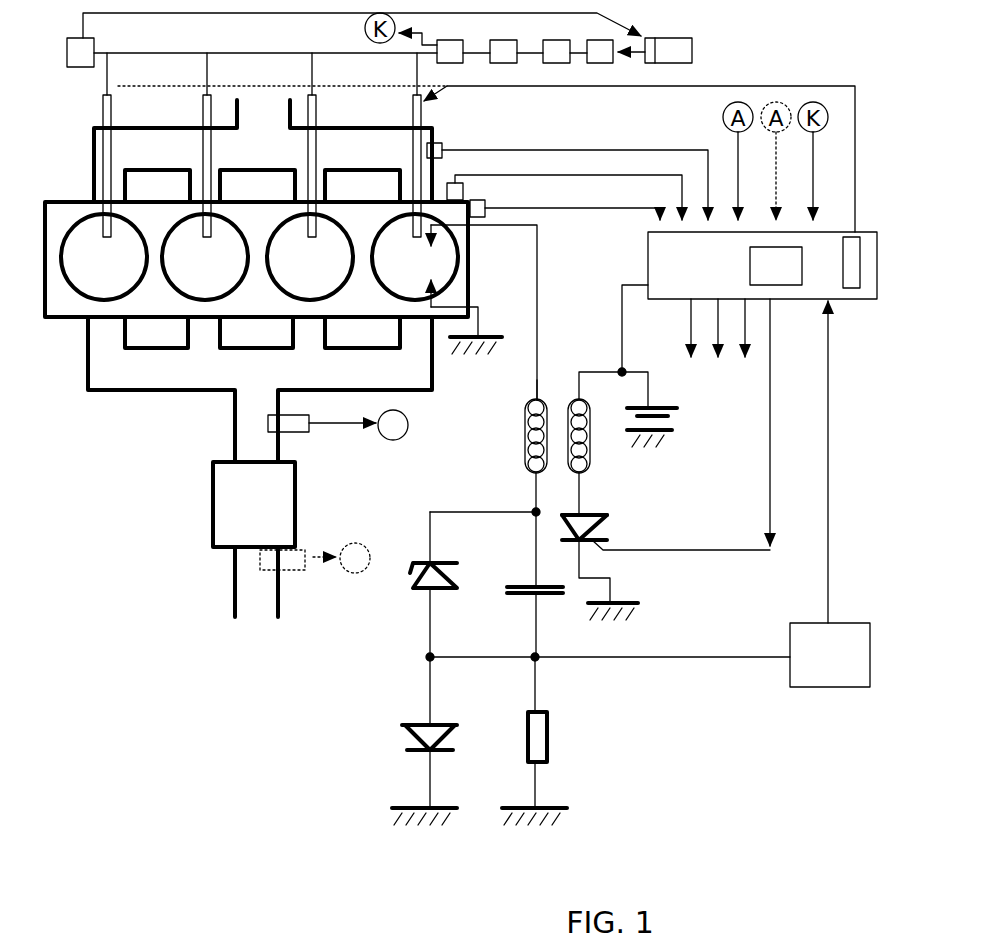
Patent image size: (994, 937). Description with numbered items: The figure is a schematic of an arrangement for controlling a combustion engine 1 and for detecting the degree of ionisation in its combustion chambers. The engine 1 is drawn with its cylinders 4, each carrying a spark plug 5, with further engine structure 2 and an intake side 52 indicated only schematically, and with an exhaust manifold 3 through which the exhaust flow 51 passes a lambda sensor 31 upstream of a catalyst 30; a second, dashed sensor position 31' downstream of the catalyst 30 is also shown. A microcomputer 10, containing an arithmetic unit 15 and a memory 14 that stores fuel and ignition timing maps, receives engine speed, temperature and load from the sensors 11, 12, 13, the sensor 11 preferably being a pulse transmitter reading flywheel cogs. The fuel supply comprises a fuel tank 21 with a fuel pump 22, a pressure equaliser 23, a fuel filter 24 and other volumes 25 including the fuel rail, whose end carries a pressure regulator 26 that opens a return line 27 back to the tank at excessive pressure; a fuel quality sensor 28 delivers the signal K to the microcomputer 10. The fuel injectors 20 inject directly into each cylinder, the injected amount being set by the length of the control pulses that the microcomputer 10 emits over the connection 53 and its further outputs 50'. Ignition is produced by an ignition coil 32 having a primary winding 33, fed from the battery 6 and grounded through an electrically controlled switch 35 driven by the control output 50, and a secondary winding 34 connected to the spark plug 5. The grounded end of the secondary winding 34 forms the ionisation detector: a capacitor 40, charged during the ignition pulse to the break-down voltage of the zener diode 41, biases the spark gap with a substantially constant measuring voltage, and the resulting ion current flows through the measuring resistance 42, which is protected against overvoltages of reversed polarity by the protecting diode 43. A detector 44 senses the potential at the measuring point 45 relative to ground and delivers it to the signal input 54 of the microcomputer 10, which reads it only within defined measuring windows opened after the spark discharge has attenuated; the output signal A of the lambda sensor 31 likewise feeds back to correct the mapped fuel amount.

The combustion engine 1 is at (58, 196).
The cylinder head 2 is at (118, 153).
The exhaust manifold 3 is at (112, 363).
The cylinder 4 is at (96, 265).
The spark plug 5 is at (428, 262).
The battery 6 is at (660, 406).
The microcomputer 10 is at (670, 266).
The sensor 11 is at (478, 200).
The sensor 12 is at (452, 183).
The sensor 13 is at (445, 148).
The memory 14 is at (848, 237).
The arithmetic unit 15 is at (764, 281).
The fuel injectors 20 is at (120, 86).
The fuel tank 21 is at (680, 50).
The fuel pump 22 is at (642, 58).
The pressure equaliser 23 is at (606, 48).
The fuel filter 24 is at (558, 48).
The other containers 25 is at (503, 46).
The pressure regulator 26 is at (67, 52).
The return line 27 is at (212, 17).
The fuel quality sensor 28 is at (460, 48).
The catalyst 30 is at (240, 522).
The lambda sensor 31 is at (338, 433).
The alternative exhaust gas sensor position 31' is at (315, 580).
The ignition coil 32 is at (558, 383).
The primary winding 33 is at (588, 446).
The secondary winding 34 is at (524, 445).
The electrically controlled switch 35 is at (590, 527).
The capacitor 40 is at (523, 585).
The zener diode 41 is at (422, 580).
The measuring resistance 42 is at (540, 730).
The protecting diode 43 is at (437, 732).
The detector 44 is at (816, 682).
The measuring point 45 is at (530, 659).
The control output 50 is at (704, 424).
The injector control signals 50' is at (718, 347).
The exhaust gas flow 51 is at (250, 664).
The intake manifold 52 is at (250, 130).
The signal line 53 is at (855, 160).
The signal input 54 is at (828, 410).